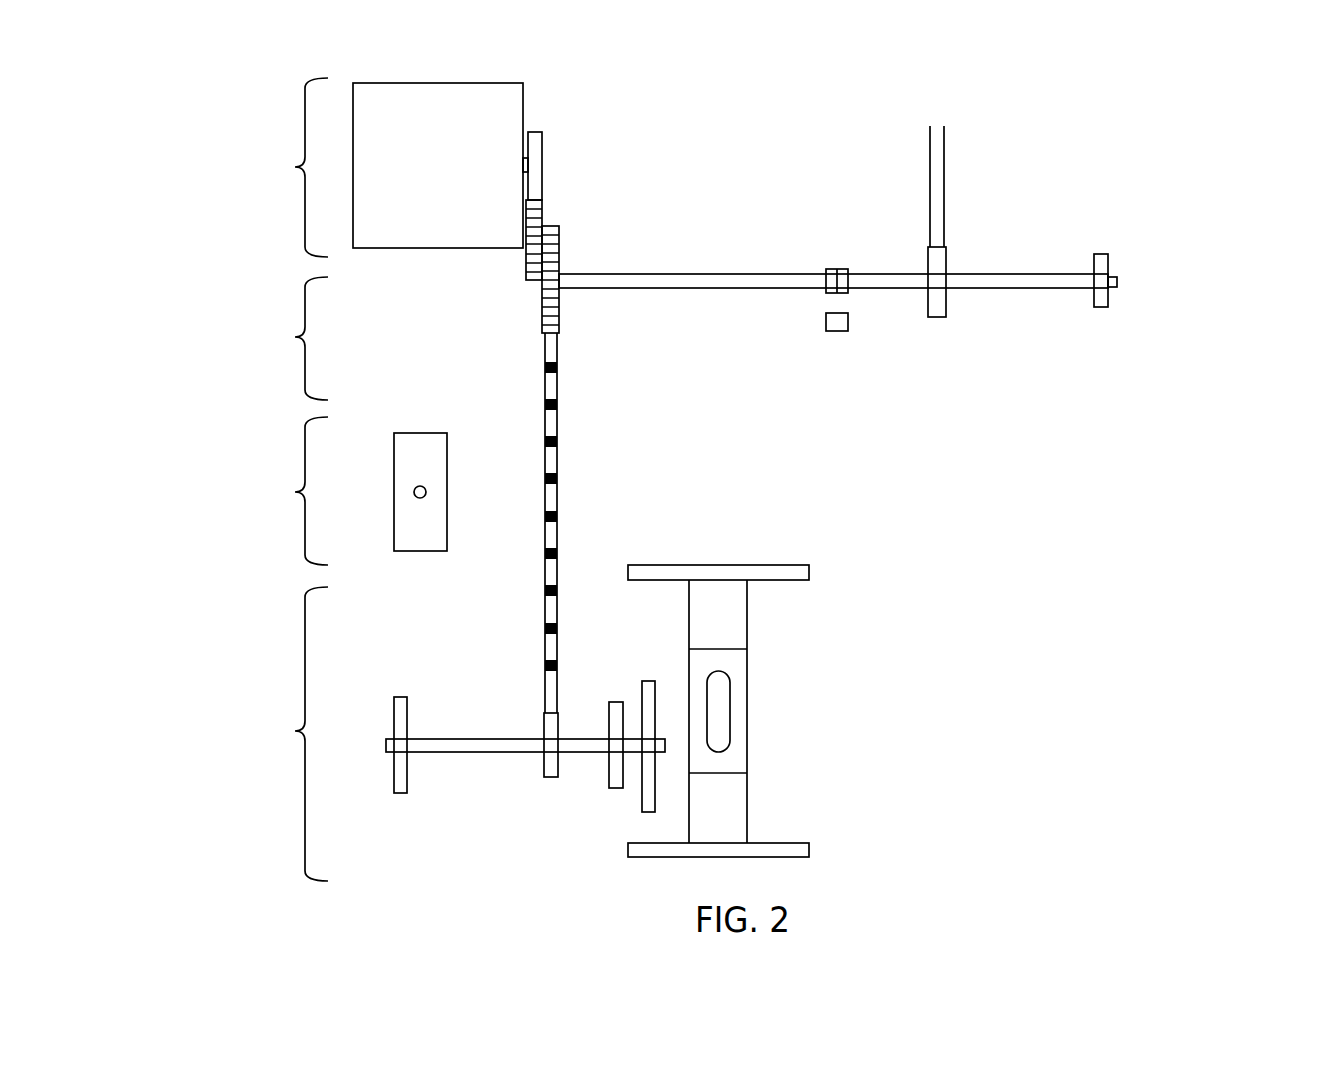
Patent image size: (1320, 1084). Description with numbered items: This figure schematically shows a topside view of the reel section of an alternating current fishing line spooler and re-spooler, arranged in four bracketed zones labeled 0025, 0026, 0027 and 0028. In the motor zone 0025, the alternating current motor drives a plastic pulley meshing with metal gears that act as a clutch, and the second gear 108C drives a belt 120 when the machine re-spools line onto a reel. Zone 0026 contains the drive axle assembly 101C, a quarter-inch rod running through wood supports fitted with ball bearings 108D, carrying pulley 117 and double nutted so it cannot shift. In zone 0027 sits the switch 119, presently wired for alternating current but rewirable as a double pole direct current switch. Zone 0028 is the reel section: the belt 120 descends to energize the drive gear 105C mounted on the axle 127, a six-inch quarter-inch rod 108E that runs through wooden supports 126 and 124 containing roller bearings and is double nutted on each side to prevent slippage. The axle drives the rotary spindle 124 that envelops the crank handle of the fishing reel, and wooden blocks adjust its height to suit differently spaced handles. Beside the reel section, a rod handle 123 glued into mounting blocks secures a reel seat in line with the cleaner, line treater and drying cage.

The motor 0025 is at (295, 167).
The drive shaft section 0026 is at (295, 337).
The controller/sensor section 0027 is at (295, 492).
The output shaft section 0028 is at (295, 731).
The second gear 108C is at (838, 297).
The pulley 117 is at (835, 342).
The shaft assembly 101C is at (1002, 297).
The ball bearing 108D is at (1112, 282).
The switch 119 is at (442, 492).
The belt 120 is at (574, 422).
The drive gear 105C is at (563, 713).
The rod handle 123 is at (755, 711).
The axle 127 is at (461, 727).
The shaft 108E is at (414, 760).
The wooden support 126 is at (399, 804).
The wooden support and rotary spindle 124 is at (642, 812).